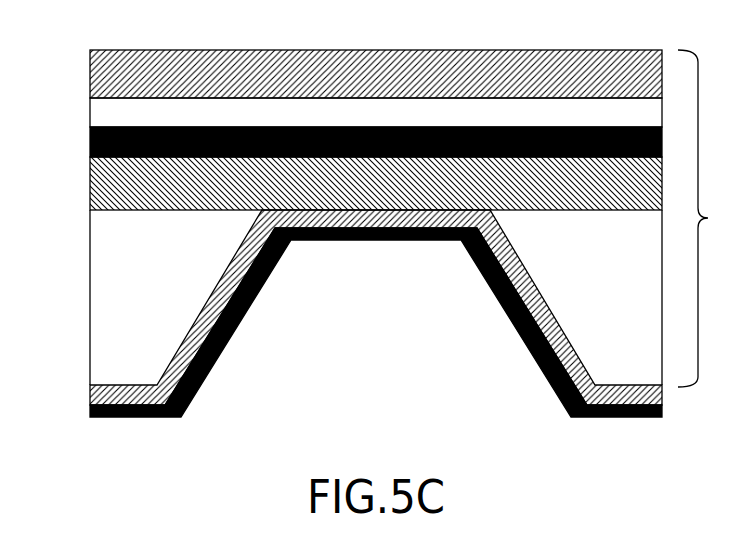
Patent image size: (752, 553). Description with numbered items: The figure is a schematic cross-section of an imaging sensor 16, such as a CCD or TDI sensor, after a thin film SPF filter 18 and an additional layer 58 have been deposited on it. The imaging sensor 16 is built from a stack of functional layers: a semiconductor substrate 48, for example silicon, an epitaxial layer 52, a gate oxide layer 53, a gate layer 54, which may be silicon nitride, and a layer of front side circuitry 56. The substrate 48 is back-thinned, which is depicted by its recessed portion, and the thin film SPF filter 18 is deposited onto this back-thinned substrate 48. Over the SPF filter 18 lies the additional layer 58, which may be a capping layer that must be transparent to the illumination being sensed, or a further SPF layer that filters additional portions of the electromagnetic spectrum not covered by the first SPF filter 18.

The imaging sensor 16 is at (710, 218).
The thin film SPF filter 18 is at (89, 395).
The semiconductor substrate 48 is at (88, 298).
The epitaxial layer 52 is at (88, 183).
The gate oxide layer 53 is at (88, 143).
The gate layer 54 is at (88, 112).
The front side circuitry layer 56 is at (88, 75).
The additional layer 58 is at (132, 418).